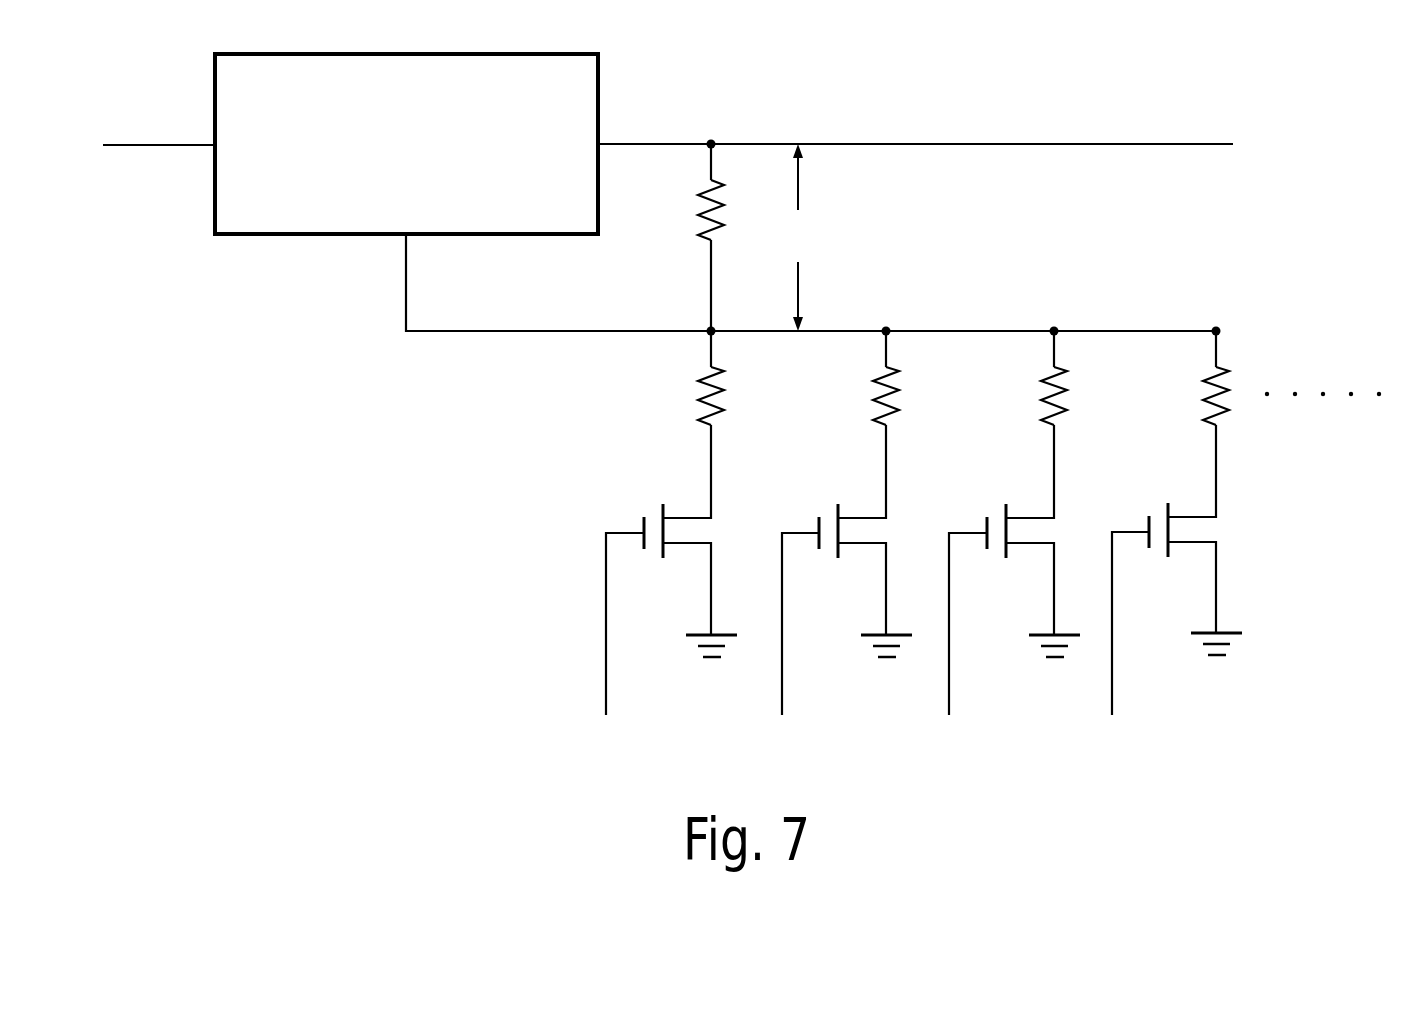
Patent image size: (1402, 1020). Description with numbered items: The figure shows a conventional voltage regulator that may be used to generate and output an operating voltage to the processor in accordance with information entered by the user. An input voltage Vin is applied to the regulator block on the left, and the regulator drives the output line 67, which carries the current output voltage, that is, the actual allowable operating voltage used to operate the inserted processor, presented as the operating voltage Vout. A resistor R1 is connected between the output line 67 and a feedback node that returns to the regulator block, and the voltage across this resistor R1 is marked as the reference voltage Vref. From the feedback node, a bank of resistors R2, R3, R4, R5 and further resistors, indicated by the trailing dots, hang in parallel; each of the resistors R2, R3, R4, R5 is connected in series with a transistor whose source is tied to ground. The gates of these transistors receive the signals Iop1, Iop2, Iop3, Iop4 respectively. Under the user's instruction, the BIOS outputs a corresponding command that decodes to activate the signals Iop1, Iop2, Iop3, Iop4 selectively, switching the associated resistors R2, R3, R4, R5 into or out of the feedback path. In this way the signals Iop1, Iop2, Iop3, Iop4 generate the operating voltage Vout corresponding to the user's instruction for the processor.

The line 67 is at (920, 144).
The input voltage Vin is at (159, 127).
The operating voltage Vout is at (1176, 126).
The reference voltage Vref is at (806, 237).
The resistor R1 is at (687, 237).
The resistor R2 is at (687, 378).
The resistor R3 is at (863, 378).
The resistor R4 is at (1031, 378).
The resistor R5 is at (1193, 378).
The IOP1 signal Iop1 is at (657, 594).
The IOP2 signal Iop2 is at (833, 594).
The IOP3 signal Iop3 is at (1001, 594).
The IOP4 signal Iop4 is at (1163, 594).